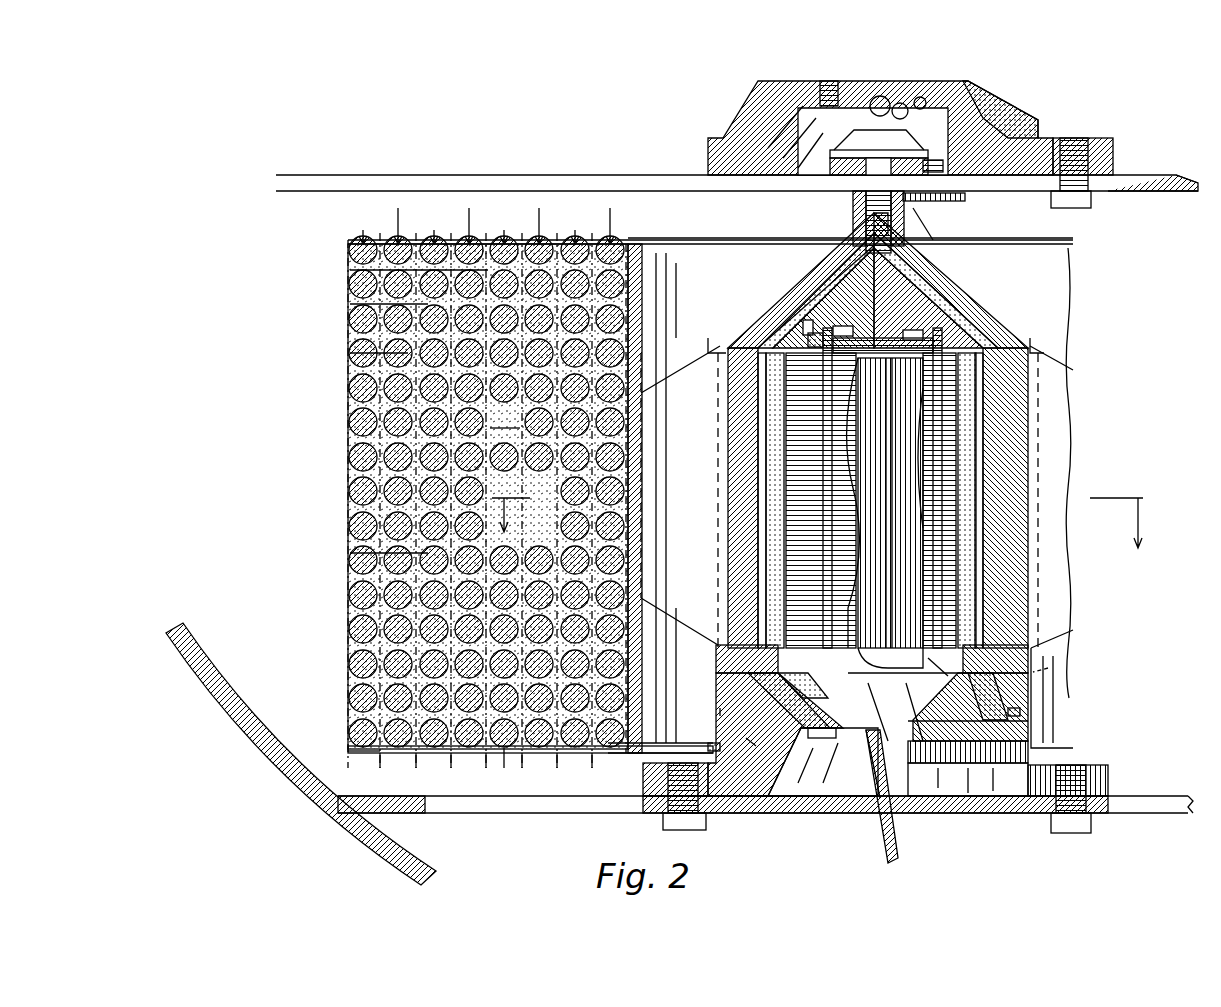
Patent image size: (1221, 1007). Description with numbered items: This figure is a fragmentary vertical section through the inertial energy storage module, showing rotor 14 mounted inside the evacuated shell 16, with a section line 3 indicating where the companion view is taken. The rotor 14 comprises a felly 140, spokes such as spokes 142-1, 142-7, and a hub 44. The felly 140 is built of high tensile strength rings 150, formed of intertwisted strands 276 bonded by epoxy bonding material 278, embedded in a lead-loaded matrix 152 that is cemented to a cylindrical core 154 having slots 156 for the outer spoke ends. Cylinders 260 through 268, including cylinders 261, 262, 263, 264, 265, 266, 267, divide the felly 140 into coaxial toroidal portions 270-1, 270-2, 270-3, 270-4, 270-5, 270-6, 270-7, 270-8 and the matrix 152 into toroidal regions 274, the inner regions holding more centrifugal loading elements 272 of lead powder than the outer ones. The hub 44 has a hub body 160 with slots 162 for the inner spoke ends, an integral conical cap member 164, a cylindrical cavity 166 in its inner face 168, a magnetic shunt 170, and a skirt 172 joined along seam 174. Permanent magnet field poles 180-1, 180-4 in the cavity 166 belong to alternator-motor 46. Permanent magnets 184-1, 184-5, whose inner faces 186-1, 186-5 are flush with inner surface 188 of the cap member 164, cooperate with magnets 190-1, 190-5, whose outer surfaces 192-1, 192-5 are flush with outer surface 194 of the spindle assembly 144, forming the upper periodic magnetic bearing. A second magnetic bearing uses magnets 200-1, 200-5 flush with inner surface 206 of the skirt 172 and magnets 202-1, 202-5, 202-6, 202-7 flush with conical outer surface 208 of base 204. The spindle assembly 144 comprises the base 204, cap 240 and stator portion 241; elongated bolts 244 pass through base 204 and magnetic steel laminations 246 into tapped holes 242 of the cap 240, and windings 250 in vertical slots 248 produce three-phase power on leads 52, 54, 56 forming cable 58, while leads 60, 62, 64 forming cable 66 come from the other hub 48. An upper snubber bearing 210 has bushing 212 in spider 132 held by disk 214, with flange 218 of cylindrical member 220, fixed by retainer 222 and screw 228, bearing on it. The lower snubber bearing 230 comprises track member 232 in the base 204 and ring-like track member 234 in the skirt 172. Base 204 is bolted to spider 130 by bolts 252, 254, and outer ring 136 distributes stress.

The section line 3 is at (821, 523).
The rotor 14 is at (331, 391).
The evacuated shell 16 is at (262, 758).
The hub 44 is at (612, 740).
The alternator-motor 46 is at (1000, 648).
The hub 48 is at (709, 88).
The lead 52 is at (856, 730).
The lead 54 is at (866, 760).
The lead 56 is at (868, 785).
The cable 58 is at (880, 845).
The lead 60 is at (868, 88).
The lead 62 is at (890, 95).
The lead 64 is at (911, 89).
The cable 66 is at (955, 95).
The spider 130 is at (440, 805).
The spider 132 is at (470, 167).
The outer ring 136 is at (408, 752).
The felly 140 is at (505, 420).
The spoke 142-1 is at (700, 372).
The spoke 142-7 is at (1060, 364).
The spindle assembly 144 is at (862, 790).
The rings 150 is at (345, 486).
The matrix 152 is at (345, 545).
The cylindrical core 154 is at (650, 645).
The slots 156 is at (636, 562).
The hub body 160 is at (708, 652).
The slots 162 is at (706, 336).
The conical cap member 164 is at (915, 215).
The cylindrical cavity 166 is at (978, 435).
The inner face 168 is at (800, 330).
The magnetic shunt 170 is at (1032, 400).
The skirt 172 is at (1030, 690).
The seam 174 is at (1042, 660).
The permanent magnet field pole 180-1 is at (722, 440).
The permanent magnet field pole 180-4 is at (1035, 470).
The permanent magnet 184-1 is at (800, 275).
The permanent magnet 184-5 is at (955, 282).
The inner face 186-1 is at (845, 255).
The inner face 186-5 is at (898, 258).
The inner surface 188 is at (795, 315).
The permanent magnet 190-1 is at (853, 325).
The permanent magnet 190-5 is at (901, 331).
The outer surface 192-1 is at (826, 298).
The outer surface 192-5 is at (925, 298).
The outer surface 194 is at (884, 228).
The permanent magnet 200-1 is at (775, 733).
The permanent magnet 200-5 is at (939, 704).
The permanent magnet 202-1 is at (789, 700).
The permanent magnet 202-5 is at (1022, 775).
The permanent magnet 202-6 is at (967, 779).
The permanent magnet 202-7 is at (968, 742).
The base 204 is at (778, 790).
The inner surface 206 is at (988, 685).
The conical outer surface 208 is at (945, 655).
The upper snubber bearing 210 is at (960, 140).
The bushing 212 is at (920, 160).
The disk 214 is at (930, 193).
The outwardly projecting flange 218 is at (822, 146).
The cylindrical member 220 is at (822, 160).
The retainer 222 is at (830, 90).
The screw 228 is at (846, 222).
The lower snubber bearing 230 is at (738, 735).
The track member 232 is at (712, 742).
The ring-like track member 234 is at (712, 704).
The cap 240 is at (883, 341).
The stator portion 241 is at (885, 462).
The tapped holes 242 is at (815, 346).
The elongated bolts 244 is at (856, 368).
The magnetic steel laminations 246 is at (760, 497).
The vertical slots 248 is at (848, 470).
The windings 250 is at (880, 500).
The bolt 252 is at (660, 812).
The bolt 254 is at (1048, 815).
The cylinder 260 is at (627, 745).
The cylinder 261 is at (585, 762).
The cylinder 262 is at (550, 762).
The cylinder 263 is at (514, 752).
The cylinder 264 is at (500, 762).
The cylinder 265 is at (478, 752).
The cylinder 266 is at (443, 752).
The cylinder 267 is at (372, 752).
The cylinder 268 is at (340, 745).
The toroidal portion 270-1 is at (611, 481).
The toroidal portion 270-2 is at (575, 493).
The toroidal portion 270-3 is at (542, 481).
The toroidal portion 270-4 is at (503, 493).
The toroidal portion 270-5 is at (469, 481).
The toroidal portion 270-6 is at (429, 493).
The toroidal portion 270-7 is at (390, 481).
The toroidal portion 270-8 is at (353, 231).
The centrifugal loading elements 272 is at (638, 234).
The toroidal regions 274 is at (345, 345).
The strands 276 is at (345, 296).
The epoxy bonding material 278 is at (345, 262).